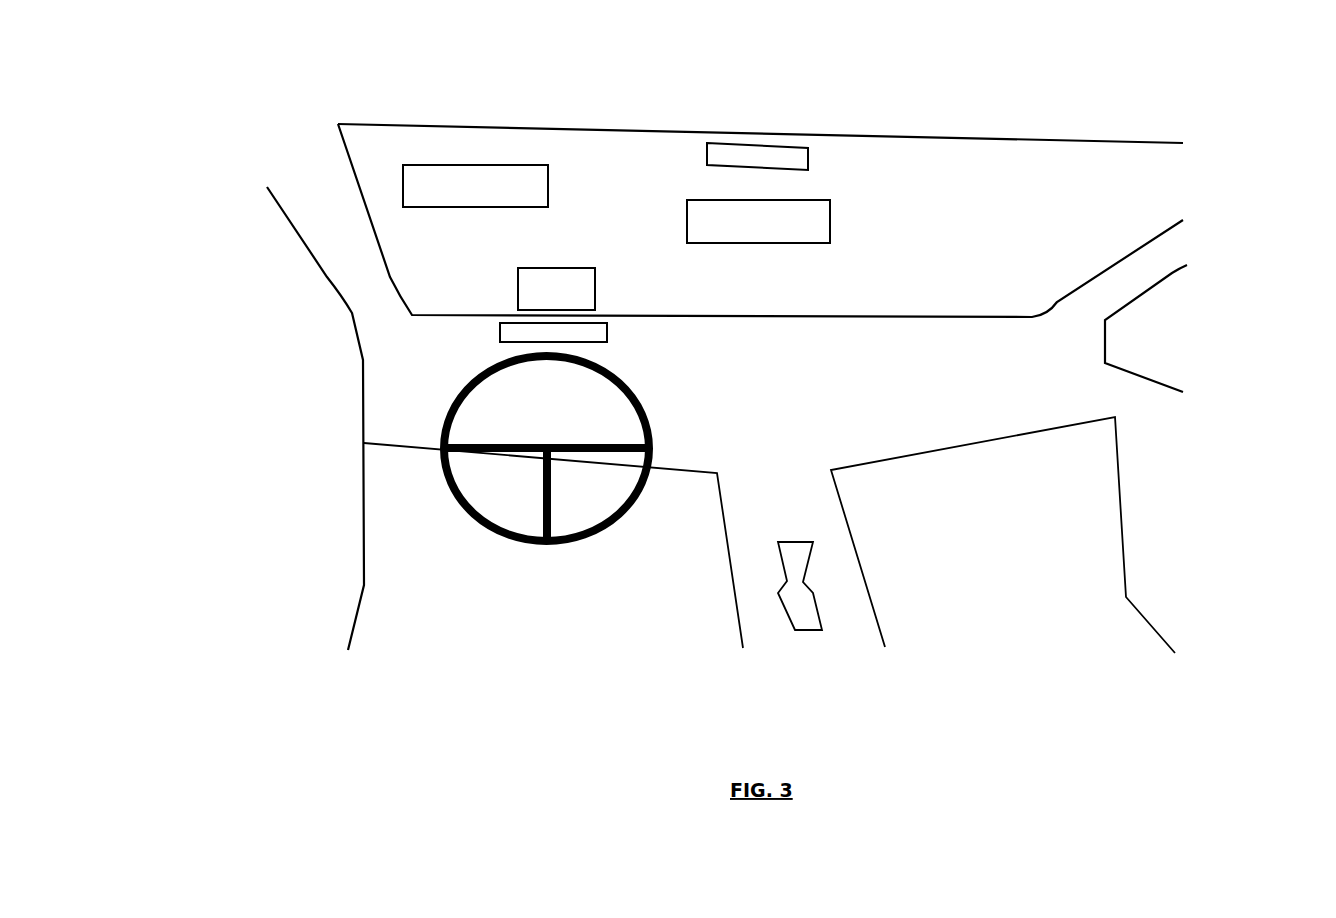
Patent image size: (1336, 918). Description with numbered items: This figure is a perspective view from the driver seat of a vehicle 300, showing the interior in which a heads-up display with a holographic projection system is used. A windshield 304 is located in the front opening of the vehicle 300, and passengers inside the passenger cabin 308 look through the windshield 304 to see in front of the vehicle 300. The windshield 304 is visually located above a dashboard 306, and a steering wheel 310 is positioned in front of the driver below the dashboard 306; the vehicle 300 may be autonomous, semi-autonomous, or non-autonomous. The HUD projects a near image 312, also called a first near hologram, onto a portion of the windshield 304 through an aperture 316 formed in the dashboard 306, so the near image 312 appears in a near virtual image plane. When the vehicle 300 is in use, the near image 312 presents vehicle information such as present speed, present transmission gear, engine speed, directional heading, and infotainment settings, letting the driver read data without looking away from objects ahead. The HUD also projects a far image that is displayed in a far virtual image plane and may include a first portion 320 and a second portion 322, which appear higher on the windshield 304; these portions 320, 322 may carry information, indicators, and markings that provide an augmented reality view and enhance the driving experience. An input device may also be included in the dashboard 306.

The vehicle 300 is at (320, 175).
The windshield 304 is at (472, 245).
The dashboard 306 is at (435, 360).
The passenger cabin 308 is at (1043, 267).
The steering wheel 310 is at (628, 385).
The near image 312 is at (500, 282).
The aperture 316 is at (498, 328).
The first portion 320 is at (440, 163).
The second portion 322 is at (695, 200).